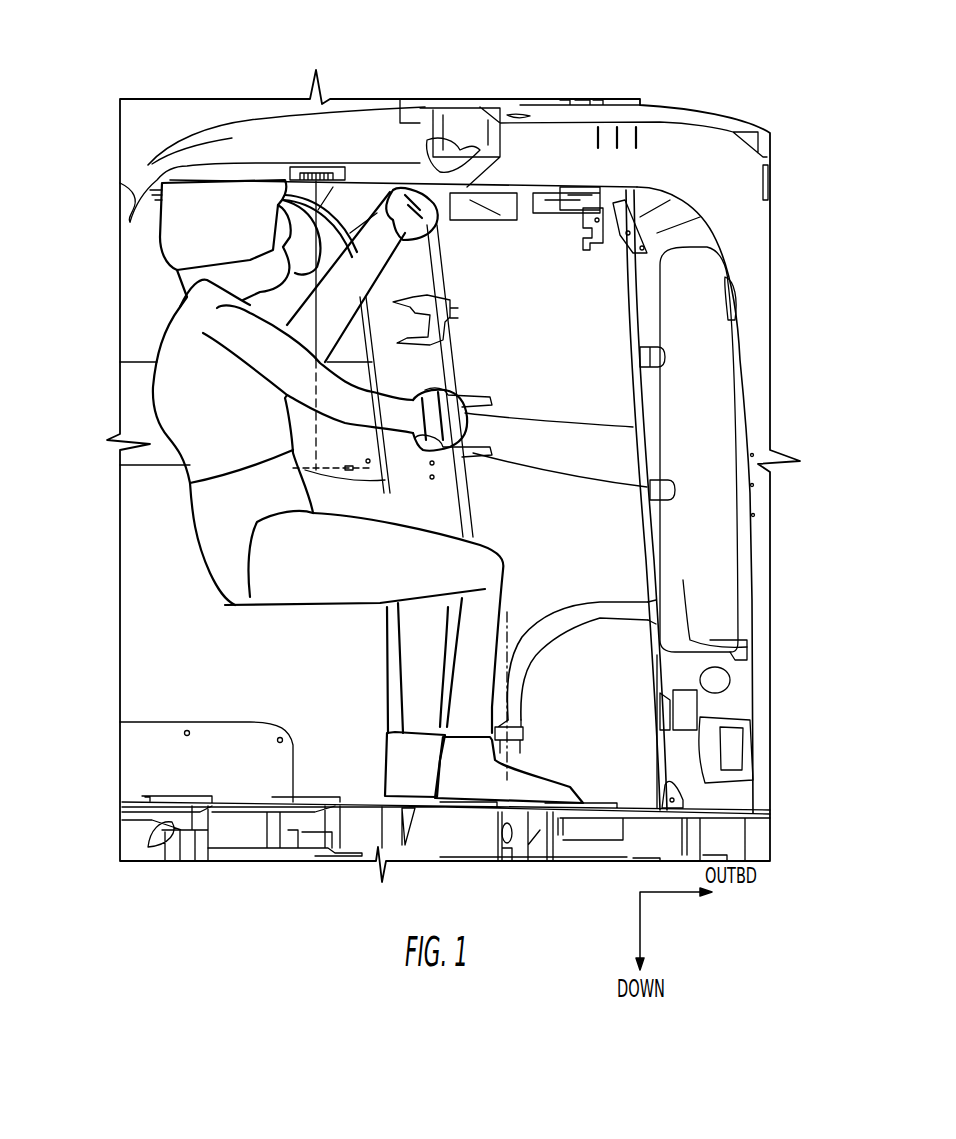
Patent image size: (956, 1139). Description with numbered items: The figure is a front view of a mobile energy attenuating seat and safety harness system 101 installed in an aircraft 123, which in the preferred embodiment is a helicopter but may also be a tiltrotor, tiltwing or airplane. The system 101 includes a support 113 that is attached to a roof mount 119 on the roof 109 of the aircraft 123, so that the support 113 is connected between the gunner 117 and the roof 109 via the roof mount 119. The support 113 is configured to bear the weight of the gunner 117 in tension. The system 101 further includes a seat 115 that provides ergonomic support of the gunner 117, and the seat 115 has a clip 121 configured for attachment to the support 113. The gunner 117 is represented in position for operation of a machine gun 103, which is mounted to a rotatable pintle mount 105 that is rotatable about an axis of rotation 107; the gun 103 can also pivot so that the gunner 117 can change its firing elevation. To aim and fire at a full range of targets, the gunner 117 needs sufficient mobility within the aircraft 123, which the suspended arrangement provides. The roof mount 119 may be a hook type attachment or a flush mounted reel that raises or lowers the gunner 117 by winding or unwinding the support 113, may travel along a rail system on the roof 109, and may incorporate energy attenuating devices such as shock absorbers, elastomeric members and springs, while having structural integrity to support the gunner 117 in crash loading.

The mobile energy attenuating seat and safety harness system 101 is at (288, 138).
The machine gun 103 is at (490, 450).
The rotatable pintle mount 105 is at (583, 598).
The axis of rotation 107 is at (518, 712).
The roof 109 is at (358, 108).
The support 113 is at (320, 333).
The seat 115 is at (180, 512).
The gunner 117 is at (160, 319).
The roof mount 119 is at (329, 167).
The clip 121 is at (350, 485).
The aircraft 123 is at (659, 97).